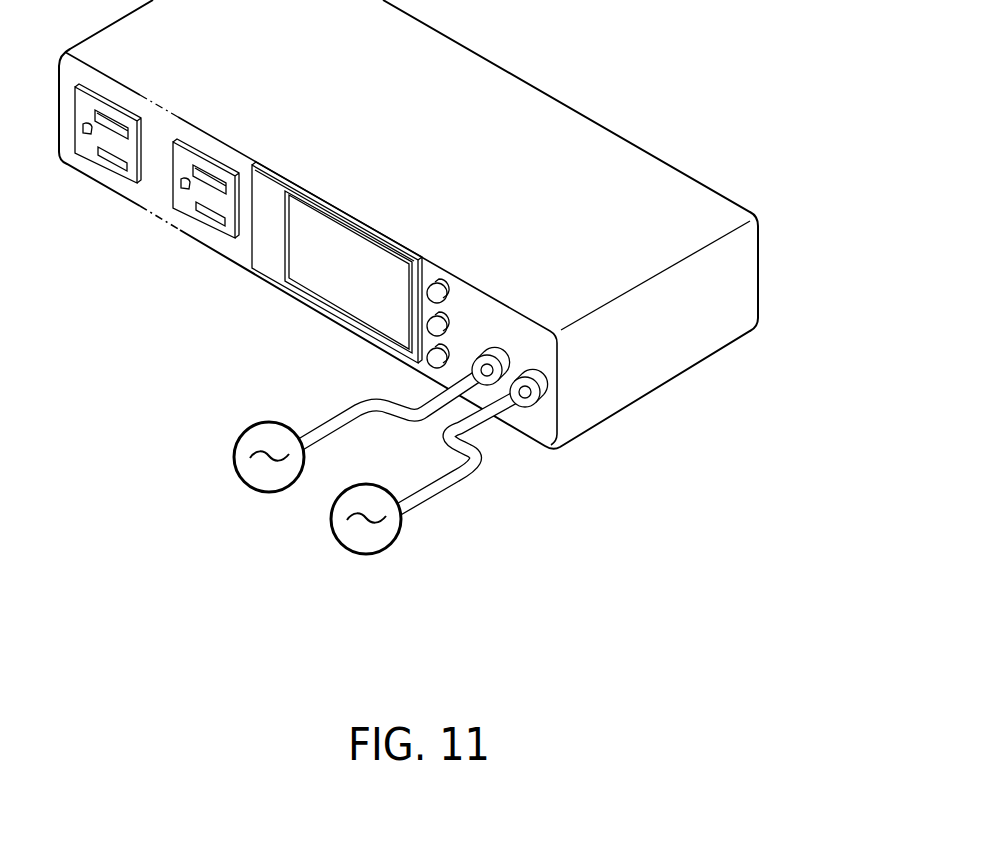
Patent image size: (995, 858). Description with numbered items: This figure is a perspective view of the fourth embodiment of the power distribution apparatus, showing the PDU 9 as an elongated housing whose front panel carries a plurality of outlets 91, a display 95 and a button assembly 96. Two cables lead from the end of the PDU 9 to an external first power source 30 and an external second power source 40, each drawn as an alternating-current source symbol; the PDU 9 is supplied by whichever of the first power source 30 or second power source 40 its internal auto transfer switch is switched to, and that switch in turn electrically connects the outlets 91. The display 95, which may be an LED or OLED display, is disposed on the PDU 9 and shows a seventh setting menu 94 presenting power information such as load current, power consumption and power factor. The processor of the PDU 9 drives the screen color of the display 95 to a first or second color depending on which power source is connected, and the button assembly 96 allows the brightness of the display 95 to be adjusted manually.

The PDU 9 is at (520, 77).
The outlets 91 is at (217, 225).
The seventh setting menu 94 is at (352, 247).
The display 95 is at (322, 212).
The button assembly 96 is at (450, 288).
The first power source 30 is at (256, 425).
The second power source 40 is at (336, 535).